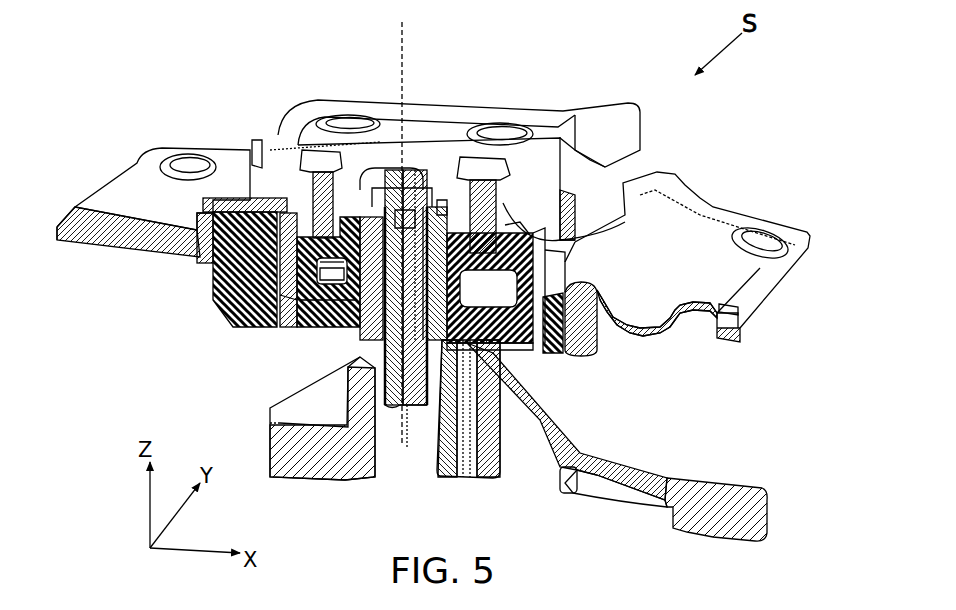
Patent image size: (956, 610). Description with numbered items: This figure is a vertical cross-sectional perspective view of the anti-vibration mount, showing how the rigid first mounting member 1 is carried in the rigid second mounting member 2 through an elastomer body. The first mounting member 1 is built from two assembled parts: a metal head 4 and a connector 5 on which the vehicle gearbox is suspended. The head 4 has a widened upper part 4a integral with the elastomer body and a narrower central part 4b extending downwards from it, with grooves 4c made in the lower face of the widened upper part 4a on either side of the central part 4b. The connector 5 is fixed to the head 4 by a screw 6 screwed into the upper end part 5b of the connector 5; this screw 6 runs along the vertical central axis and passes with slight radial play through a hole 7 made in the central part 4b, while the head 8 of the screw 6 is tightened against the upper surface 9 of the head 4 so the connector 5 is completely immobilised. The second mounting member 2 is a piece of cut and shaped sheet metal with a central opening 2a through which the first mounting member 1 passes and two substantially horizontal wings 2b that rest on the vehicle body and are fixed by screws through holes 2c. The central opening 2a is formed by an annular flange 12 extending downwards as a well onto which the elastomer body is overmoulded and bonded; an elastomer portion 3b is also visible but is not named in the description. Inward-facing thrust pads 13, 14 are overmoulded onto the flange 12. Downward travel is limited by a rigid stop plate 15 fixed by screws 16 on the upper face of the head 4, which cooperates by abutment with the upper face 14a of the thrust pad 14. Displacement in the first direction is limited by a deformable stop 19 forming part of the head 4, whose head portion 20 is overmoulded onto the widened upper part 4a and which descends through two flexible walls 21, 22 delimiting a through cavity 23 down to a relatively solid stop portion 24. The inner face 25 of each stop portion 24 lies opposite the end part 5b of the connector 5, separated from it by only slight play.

The first mounting member 1 is at (385, 482).
The second mounting member 2 is at (708, 200).
The central opening 2a is at (277, 320).
The wings 2b is at (133, 193).
The holes 2c is at (198, 155).
The housing cover portion 3b is at (257, 143).
The head 4 is at (523, 203).
The widened upper part 4a is at (580, 220).
The central part 4b is at (405, 222).
The grooves 4c is at (441, 207).
The connector 5 is at (583, 453).
The upper end part 5b is at (440, 333).
The screw 6 is at (388, 343).
The hole 7 is at (340, 302).
The head of the screw 8 is at (424, 193).
The upper surface 9 is at (388, 166).
The annular flange 12 is at (240, 300).
The thrust pad 13 is at (552, 352).
The thrust pad 14 is at (247, 262).
The upper face 14a is at (248, 198).
The stop plate 15 is at (580, 123).
The screws 16 is at (308, 152).
The deformable stop 19 is at (524, 350).
The head portion 20 is at (510, 230).
The flexible wall 21 is at (290, 302).
The flexible wall 22 is at (337, 330).
The cavity 23 is at (335, 265).
The stop portion 24 is at (478, 345).
The inner face 25 is at (440, 325).